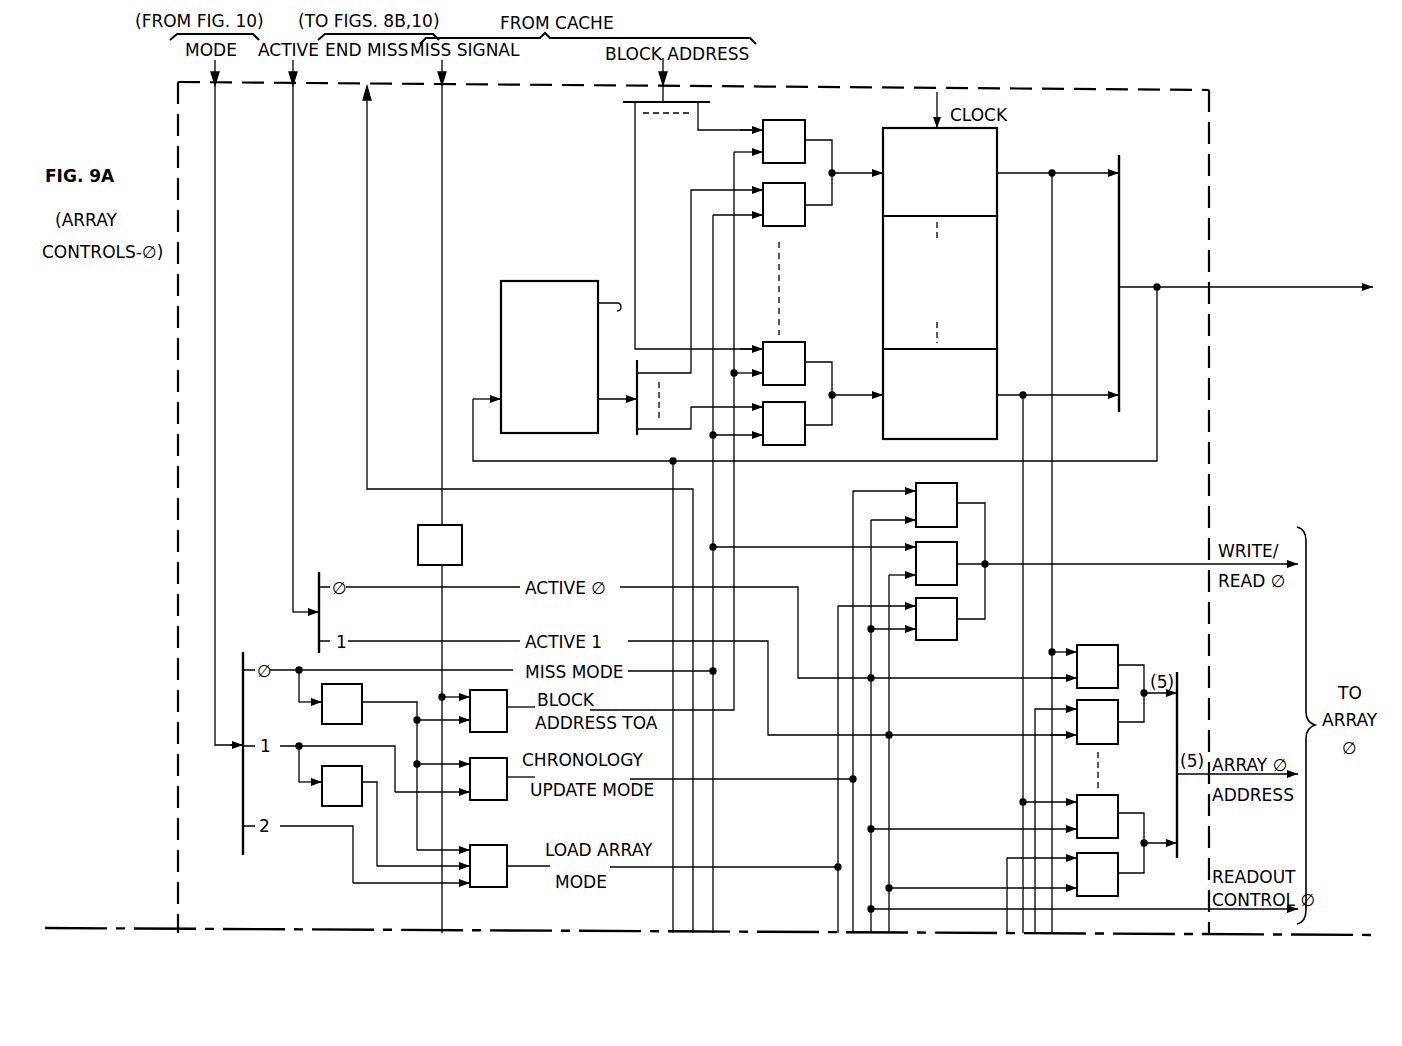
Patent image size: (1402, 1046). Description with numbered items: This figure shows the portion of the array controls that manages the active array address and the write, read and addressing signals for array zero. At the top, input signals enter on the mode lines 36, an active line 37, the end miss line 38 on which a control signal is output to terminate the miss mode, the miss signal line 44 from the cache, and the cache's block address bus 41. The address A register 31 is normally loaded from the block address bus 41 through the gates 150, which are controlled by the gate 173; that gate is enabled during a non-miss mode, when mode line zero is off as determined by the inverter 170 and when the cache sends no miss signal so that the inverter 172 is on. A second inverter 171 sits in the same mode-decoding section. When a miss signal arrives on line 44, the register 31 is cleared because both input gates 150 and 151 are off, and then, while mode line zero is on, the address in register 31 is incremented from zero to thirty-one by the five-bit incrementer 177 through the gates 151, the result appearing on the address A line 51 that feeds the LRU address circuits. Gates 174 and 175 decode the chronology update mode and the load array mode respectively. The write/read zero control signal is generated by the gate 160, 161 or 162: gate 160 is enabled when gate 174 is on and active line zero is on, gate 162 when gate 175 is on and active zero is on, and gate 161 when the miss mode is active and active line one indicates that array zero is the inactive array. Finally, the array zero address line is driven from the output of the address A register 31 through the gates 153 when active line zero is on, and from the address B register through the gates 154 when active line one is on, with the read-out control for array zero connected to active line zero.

The mode lines 36 is at (213, 71).
The active signal line 37 is at (291, 70).
The end miss line 38 is at (363, 73).
The miss signal line 44 is at (438, 73).
The block address bus 41 is at (660, 66).
The gates 150 is at (806, 126).
The gates 151 is at (806, 222).
The address A register 31 is at (997, 280).
The address A line 51 is at (1331, 284).
The 5-bit incrementer 177 is at (549, 280).
The inverter 172 is at (463, 536).
The inverter 170 is at (362, 701).
The inverter 171 is at (356, 784).
The gate 173 is at (478, 734).
The gate 174 is at (482, 802).
The gate 175 is at (497, 898).
The gate 160 is at (957, 504).
The gate 161 is at (957, 562).
The gate 162 is at (955, 640).
The gates 153 is at (1110, 645).
The gates 154 is at (1118, 737).